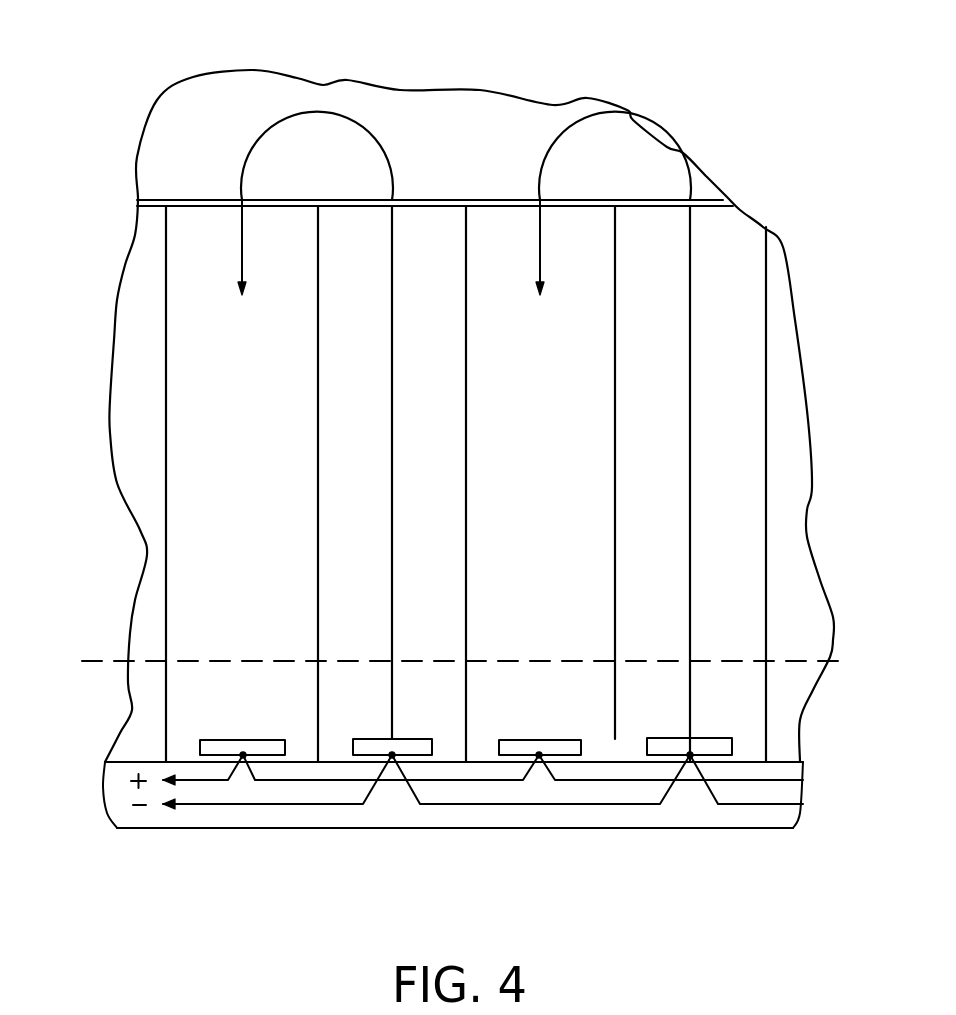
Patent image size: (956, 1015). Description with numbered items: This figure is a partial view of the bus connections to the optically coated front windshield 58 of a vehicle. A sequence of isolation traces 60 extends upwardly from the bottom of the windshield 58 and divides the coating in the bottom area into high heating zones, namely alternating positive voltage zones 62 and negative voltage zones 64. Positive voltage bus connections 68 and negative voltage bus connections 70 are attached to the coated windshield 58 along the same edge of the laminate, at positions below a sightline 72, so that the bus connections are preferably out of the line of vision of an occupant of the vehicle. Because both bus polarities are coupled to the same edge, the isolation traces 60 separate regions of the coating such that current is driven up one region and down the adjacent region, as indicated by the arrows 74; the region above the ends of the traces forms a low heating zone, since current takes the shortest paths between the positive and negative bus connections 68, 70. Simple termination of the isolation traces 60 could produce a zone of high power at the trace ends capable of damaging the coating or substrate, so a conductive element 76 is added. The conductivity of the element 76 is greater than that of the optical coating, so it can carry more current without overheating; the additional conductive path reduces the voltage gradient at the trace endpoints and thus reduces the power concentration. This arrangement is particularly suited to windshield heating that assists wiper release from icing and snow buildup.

The front windshield 58 is at (495, 108).
The isolation traces 60 is at (166, 382).
The positive voltage zones 62 is at (259, 639).
The negative voltage zones 64 is at (439, 639).
The positive voltage bus connections 68 is at (242, 738).
The negative voltage bus connections 70 is at (372, 738).
The sightline 72 is at (97, 662).
The arrows 74 is at (308, 135).
The conductive element 76 is at (150, 198).